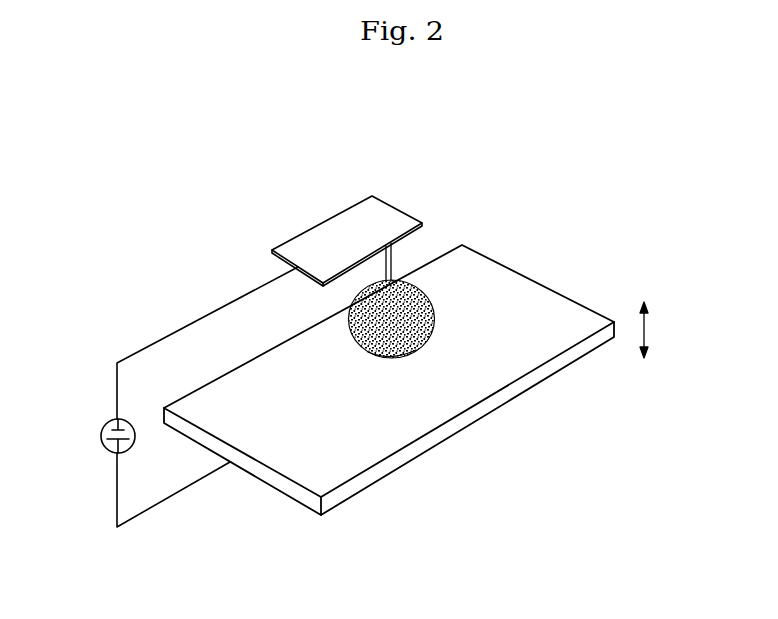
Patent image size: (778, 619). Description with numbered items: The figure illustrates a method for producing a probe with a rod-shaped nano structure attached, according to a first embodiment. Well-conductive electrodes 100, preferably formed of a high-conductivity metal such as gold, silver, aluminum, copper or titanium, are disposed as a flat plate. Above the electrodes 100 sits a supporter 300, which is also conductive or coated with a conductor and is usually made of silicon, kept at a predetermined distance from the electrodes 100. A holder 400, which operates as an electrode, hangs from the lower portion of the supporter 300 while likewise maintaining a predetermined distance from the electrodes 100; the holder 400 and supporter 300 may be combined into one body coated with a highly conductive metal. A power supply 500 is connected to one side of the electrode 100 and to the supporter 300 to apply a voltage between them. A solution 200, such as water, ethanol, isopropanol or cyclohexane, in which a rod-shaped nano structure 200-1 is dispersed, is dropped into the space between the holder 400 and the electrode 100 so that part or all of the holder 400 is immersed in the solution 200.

The electrodes 100 is at (573, 355).
The solution 200 is at (441, 303).
The rod-shaped nano structure 200-1 is at (428, 340).
The supporter 300 is at (335, 225).
The holder 400 is at (395, 262).
The power supply 500 is at (101, 437).